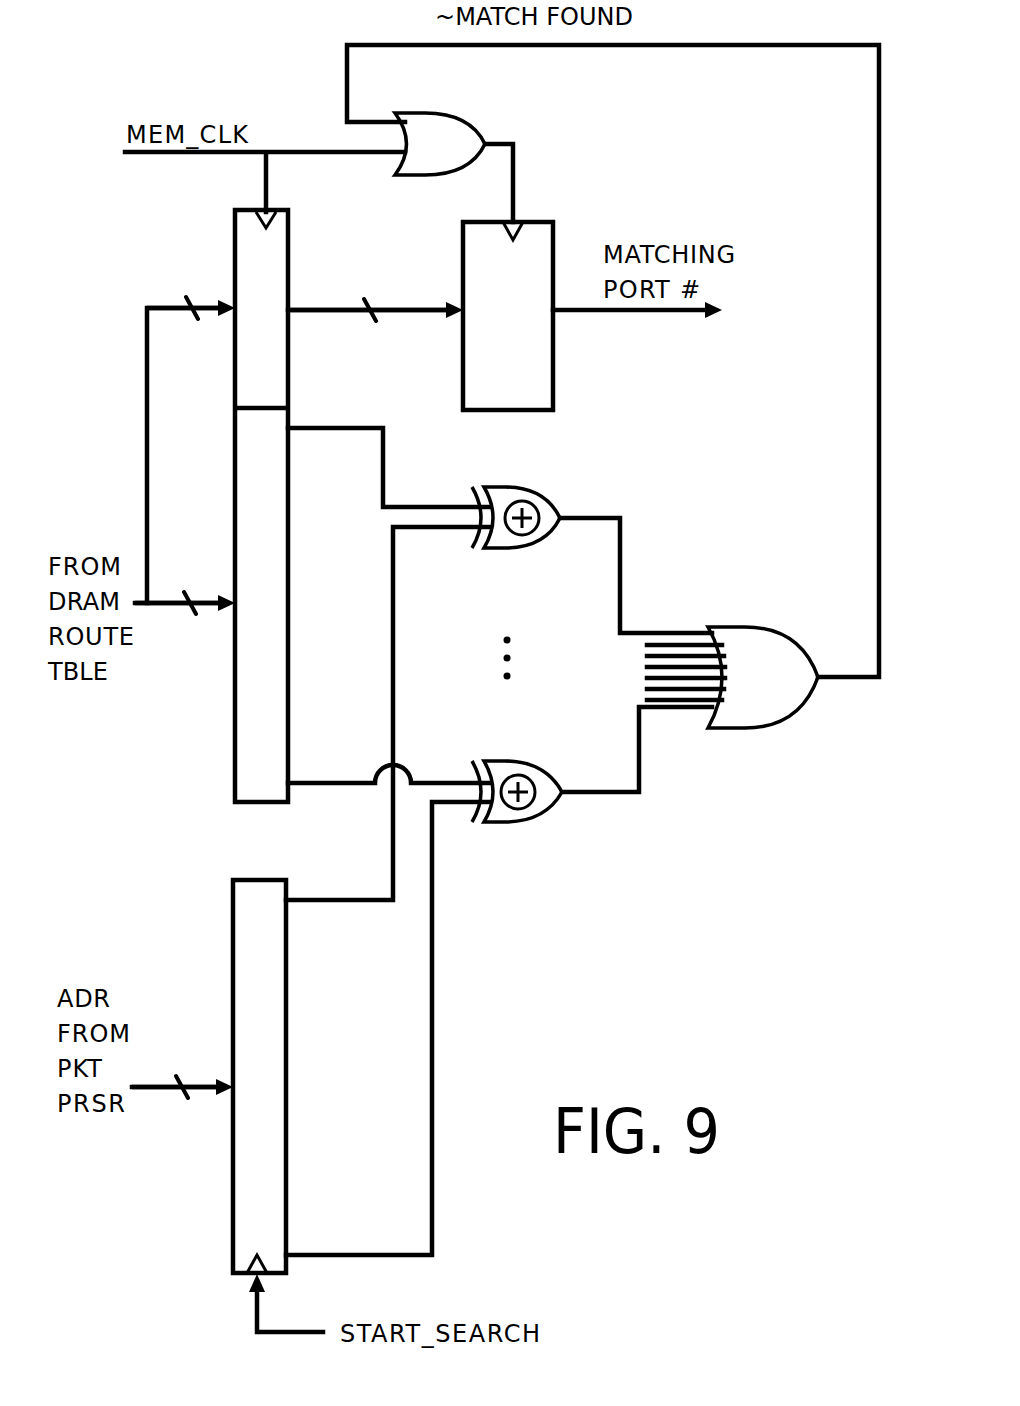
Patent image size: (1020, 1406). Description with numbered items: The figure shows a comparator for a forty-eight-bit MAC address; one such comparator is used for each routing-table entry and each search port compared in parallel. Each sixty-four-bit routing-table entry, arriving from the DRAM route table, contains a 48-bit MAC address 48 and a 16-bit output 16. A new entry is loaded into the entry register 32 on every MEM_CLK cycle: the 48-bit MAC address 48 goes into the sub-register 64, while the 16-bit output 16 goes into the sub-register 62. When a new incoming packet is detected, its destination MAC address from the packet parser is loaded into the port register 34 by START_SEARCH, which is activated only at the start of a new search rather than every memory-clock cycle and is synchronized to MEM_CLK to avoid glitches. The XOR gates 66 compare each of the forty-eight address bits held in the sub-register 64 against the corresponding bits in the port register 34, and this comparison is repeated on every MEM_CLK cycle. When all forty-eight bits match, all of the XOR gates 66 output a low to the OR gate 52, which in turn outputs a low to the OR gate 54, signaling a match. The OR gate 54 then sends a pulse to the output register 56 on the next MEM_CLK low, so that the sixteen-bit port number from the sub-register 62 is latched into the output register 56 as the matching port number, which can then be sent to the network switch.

The 16-bit output 16 is at (298, 288).
The 48-bit MAC address 48 is at (177, 824).
The entry register 32 is at (258, 506).
The port register 34 is at (286, 1085).
The sub-register 62 is at (288, 385).
The sub-register 64 is at (288, 632).
The XOR gates 66 is at (526, 548).
The OR gate 52 is at (776, 692).
The OR gate 54 is at (452, 157).
The output register 56 is at (541, 394).